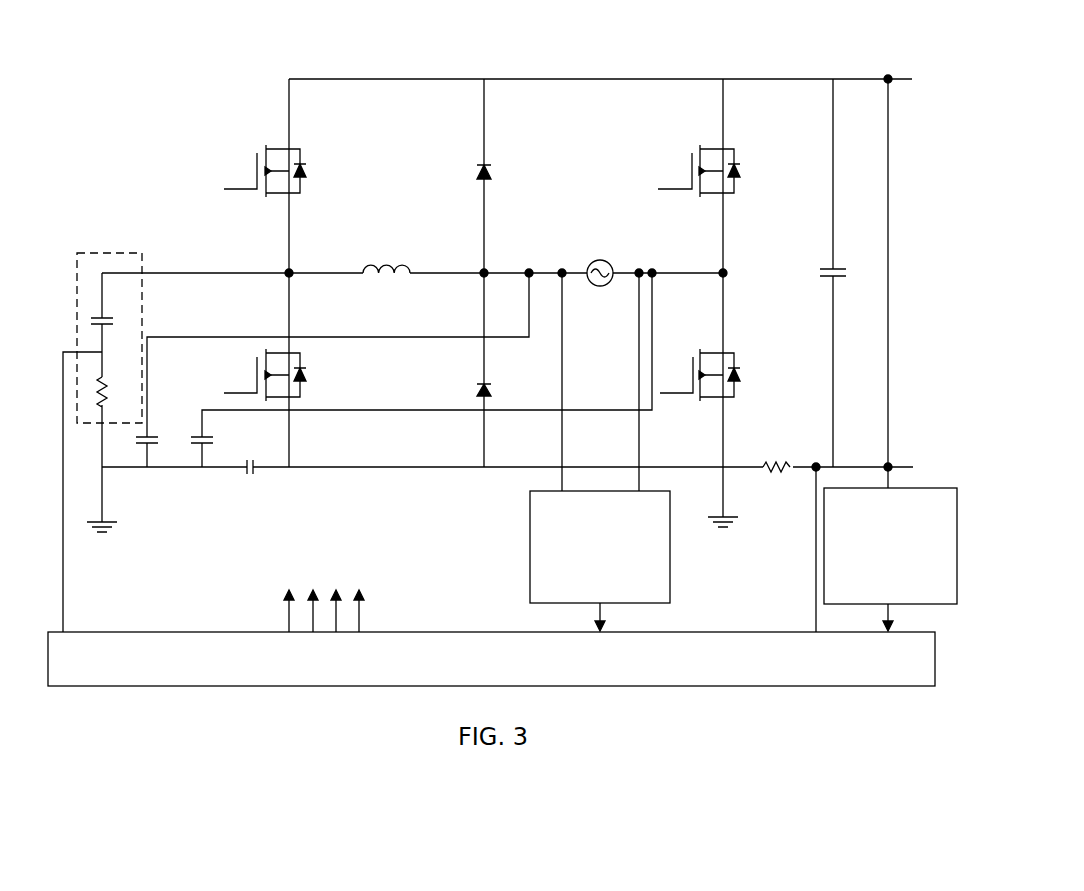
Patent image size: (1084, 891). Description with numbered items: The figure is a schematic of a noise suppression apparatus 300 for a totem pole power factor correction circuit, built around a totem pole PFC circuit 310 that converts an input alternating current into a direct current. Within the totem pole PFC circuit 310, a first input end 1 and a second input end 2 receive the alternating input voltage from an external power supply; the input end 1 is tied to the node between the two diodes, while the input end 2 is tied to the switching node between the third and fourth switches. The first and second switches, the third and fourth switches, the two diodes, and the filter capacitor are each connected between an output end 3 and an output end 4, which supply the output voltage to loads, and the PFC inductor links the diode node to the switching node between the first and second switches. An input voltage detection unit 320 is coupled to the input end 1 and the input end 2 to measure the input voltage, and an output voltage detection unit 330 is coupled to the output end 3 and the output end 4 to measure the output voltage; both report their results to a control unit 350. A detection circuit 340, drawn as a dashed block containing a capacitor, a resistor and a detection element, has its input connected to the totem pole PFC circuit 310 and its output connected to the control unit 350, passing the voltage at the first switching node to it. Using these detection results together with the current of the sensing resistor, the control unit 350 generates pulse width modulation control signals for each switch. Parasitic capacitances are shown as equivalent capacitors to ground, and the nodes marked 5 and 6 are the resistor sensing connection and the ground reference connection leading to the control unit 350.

The noise suppression apparatus 300 is at (511, 289).
The totem pole PFC circuit 310 is at (668, 70).
The detection circuit 340 is at (107, 252).
The input voltage detection unit 320 is at (600, 561).
The output voltage detection unit 330 is at (890, 559).
The control unit 350 is at (491, 596).
The input end 1 is at (570, 380).
The input end 2 is at (631, 380).
The output end 3 is at (898, 67).
The output end 4 is at (905, 476).
The sensing node 5 is at (807, 547).
The ground reference connection 6 is at (72, 492).